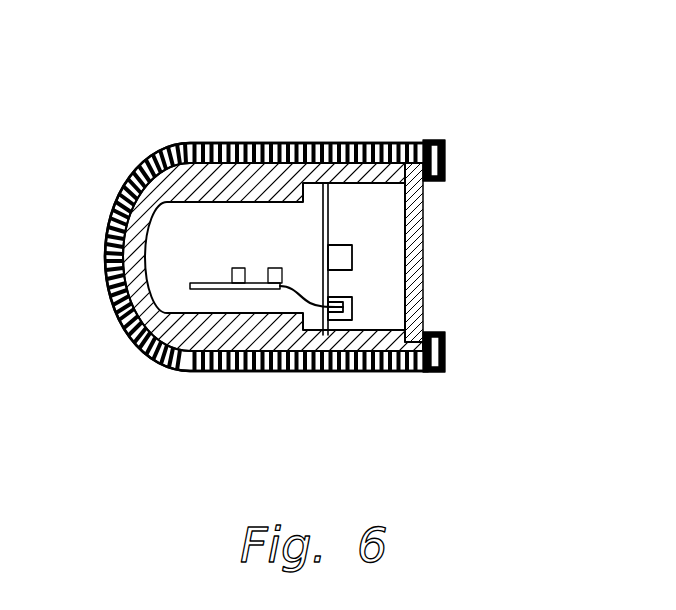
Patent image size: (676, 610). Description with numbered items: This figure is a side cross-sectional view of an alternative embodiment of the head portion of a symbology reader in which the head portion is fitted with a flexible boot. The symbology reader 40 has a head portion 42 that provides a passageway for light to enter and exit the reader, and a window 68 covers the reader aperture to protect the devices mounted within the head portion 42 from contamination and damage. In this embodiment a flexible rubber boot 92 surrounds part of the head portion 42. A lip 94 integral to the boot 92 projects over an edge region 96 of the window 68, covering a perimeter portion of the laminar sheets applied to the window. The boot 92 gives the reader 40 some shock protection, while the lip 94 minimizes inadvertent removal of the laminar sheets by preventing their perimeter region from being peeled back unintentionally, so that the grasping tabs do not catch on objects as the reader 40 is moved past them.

The symbology reader 40 is at (125, 176).
The head portion 42 is at (213, 144).
The window 68 is at (423, 277).
The flexible rubber boot 92 is at (440, 141).
The lip 94 is at (445, 180).
The edge region 96 is at (428, 372).